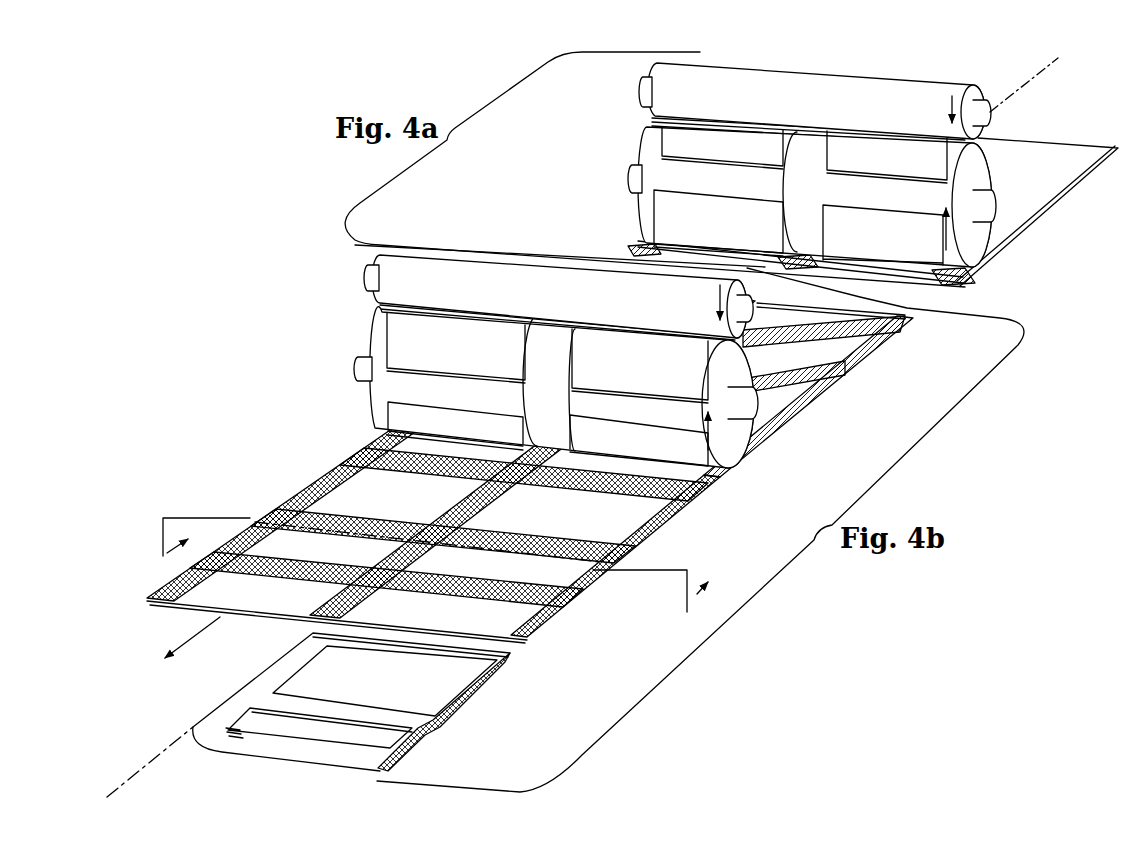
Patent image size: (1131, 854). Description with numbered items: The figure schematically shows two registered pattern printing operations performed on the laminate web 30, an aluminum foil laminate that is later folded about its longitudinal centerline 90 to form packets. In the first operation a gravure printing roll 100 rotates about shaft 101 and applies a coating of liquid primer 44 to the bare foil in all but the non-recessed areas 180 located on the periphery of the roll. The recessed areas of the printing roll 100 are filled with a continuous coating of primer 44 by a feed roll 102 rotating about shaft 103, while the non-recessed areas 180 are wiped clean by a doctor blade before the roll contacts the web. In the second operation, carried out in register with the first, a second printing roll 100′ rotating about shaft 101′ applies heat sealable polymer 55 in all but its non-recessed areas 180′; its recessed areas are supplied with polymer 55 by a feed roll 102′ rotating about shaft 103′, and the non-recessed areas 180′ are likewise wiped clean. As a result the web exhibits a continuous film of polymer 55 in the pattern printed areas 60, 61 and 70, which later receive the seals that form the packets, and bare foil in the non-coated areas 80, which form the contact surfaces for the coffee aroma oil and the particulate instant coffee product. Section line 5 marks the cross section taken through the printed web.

In FIG. 4A, the laminate web 30 is at (1066, 148).
In FIG. 4A, the primer 44 is at (905, 92).
In FIG. 4B, the primer 44 is at (910, 310).
In FIG. 4A, the longitudinal centerline 90 is at (1040, 88).
In FIG. 4B, the longitudinal centerline 90 is at (330, 620).
In FIG. 4A, the gravure printing roll 100 is at (625, 192).
In FIG. 4A, the shaft 101 is at (990, 206).
In FIG. 4A, the feed roll 102 is at (751, 70).
In FIG. 4A, the shaft 103 is at (985, 108).
In FIG. 4A, the non-recessed areas 180 is at (838, 222).
In FIG. 4B, the second printing roll 100′ is at (366, 340).
In FIG. 4B, the shaft 101′ is at (753, 403).
In FIG. 4B, the feed roll 102′ is at (383, 256).
In FIG. 4B, the shaft 103′ is at (750, 302).
In FIG. 4B, the non-recessed areas 180′ is at (580, 430).
In FIG. 4B, the heat sealable polymer 55 is at (417, 288).
In FIG. 4B, the pattern printed area 60 is at (375, 443).
In FIG. 4B, the pattern printed area 61 is at (530, 480).
In FIG. 4B, the pattern printed areas 70 is at (680, 474).
In FIG. 4B, the non-coated areas 80 is at (370, 487).
In FIG. 4B, the section line 5- 5 is at (441, 565).